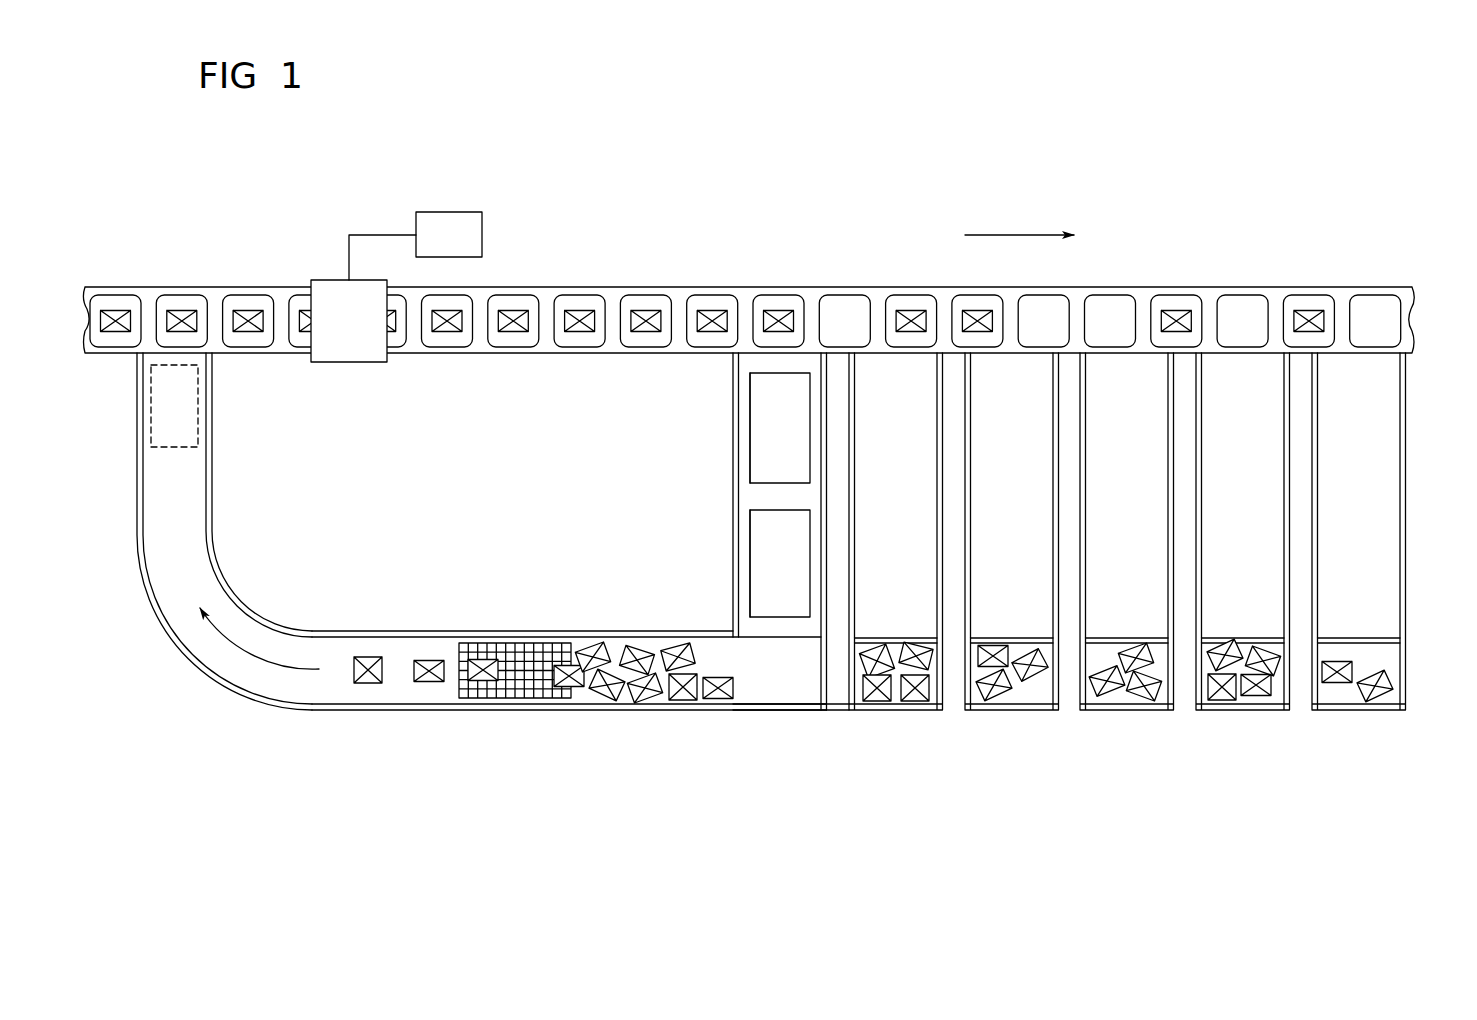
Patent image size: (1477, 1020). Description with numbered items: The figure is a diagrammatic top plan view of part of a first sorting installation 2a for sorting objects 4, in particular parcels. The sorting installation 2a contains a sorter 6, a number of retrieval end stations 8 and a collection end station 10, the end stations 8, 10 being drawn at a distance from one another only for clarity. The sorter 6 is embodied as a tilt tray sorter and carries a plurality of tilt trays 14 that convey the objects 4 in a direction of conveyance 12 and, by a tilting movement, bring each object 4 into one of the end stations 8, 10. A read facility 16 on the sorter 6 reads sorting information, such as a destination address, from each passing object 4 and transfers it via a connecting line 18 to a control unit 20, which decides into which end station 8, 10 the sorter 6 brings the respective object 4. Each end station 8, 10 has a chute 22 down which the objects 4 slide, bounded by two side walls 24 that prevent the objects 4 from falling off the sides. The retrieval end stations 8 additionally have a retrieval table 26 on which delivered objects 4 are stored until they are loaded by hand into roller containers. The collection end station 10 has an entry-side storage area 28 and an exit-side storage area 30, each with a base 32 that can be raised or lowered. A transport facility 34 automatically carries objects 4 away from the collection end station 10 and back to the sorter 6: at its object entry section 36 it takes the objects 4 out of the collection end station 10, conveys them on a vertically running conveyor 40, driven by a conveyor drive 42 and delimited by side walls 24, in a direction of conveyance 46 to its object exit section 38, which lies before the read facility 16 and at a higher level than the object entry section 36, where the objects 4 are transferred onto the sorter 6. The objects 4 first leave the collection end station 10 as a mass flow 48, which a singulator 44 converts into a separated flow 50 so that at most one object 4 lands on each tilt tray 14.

The sorting installation 2a is at (820, 143).
The objects 4 is at (514, 310).
The sorter 6 is at (647, 264).
The retrieval end stations 8 is at (868, 720).
The collection end station 10 is at (723, 505).
The direction of conveyance 12 is at (997, 235).
The tilt trays 14 is at (182, 294).
The read facility 16 is at (345, 363).
The connecting line 18 is at (377, 234).
The control unit 20 is at (448, 212).
The chute 22 is at (802, 497).
The side walls 24 is at (733, 393).
The retrieval table 26 is at (897, 704).
The entry-side storage area 28 is at (748, 438).
The exit-side storage area 30 is at (748, 561).
The base 32 is at (757, 463).
The transport facility 34 is at (450, 614).
The object entry section 36 is at (750, 720).
The object exit section 38 is at (228, 375).
The conveyor 40 is at (162, 522).
The conveyor drive 42 is at (151, 400).
The singulator 44 is at (518, 680).
The direction of conveyance 46 is at (246, 655).
The mass flow 48 is at (650, 633).
The separated flow 50 is at (427, 690).